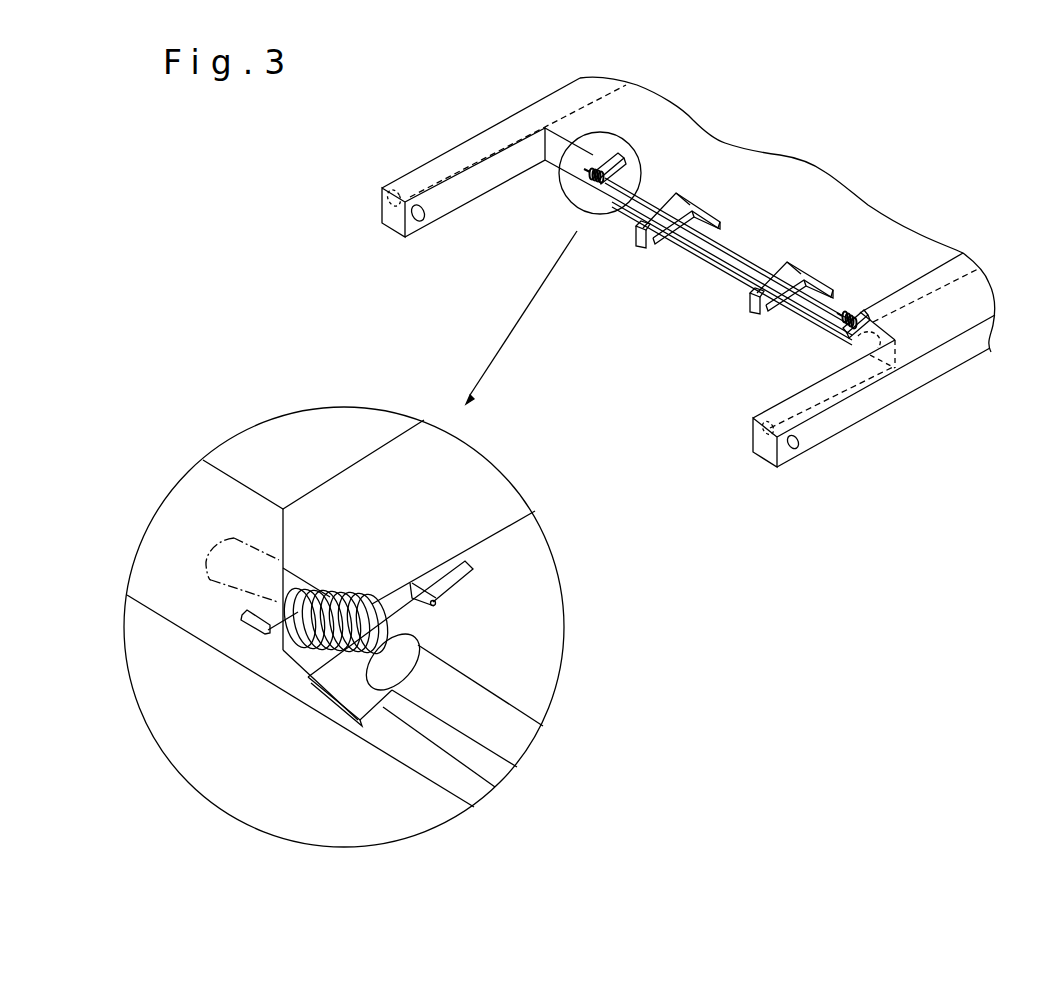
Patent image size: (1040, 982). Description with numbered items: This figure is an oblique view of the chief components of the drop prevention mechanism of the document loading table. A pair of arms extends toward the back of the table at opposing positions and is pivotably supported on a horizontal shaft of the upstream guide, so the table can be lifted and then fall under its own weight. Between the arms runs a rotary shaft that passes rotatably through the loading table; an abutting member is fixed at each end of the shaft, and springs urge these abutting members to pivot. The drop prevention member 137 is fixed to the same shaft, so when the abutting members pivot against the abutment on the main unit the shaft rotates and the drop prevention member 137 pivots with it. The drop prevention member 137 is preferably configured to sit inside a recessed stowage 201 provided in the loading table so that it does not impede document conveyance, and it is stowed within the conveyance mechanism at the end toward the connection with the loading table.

The drop prevention member 137 is at (669, 268).
The recessed stowage 201 is at (704, 285).